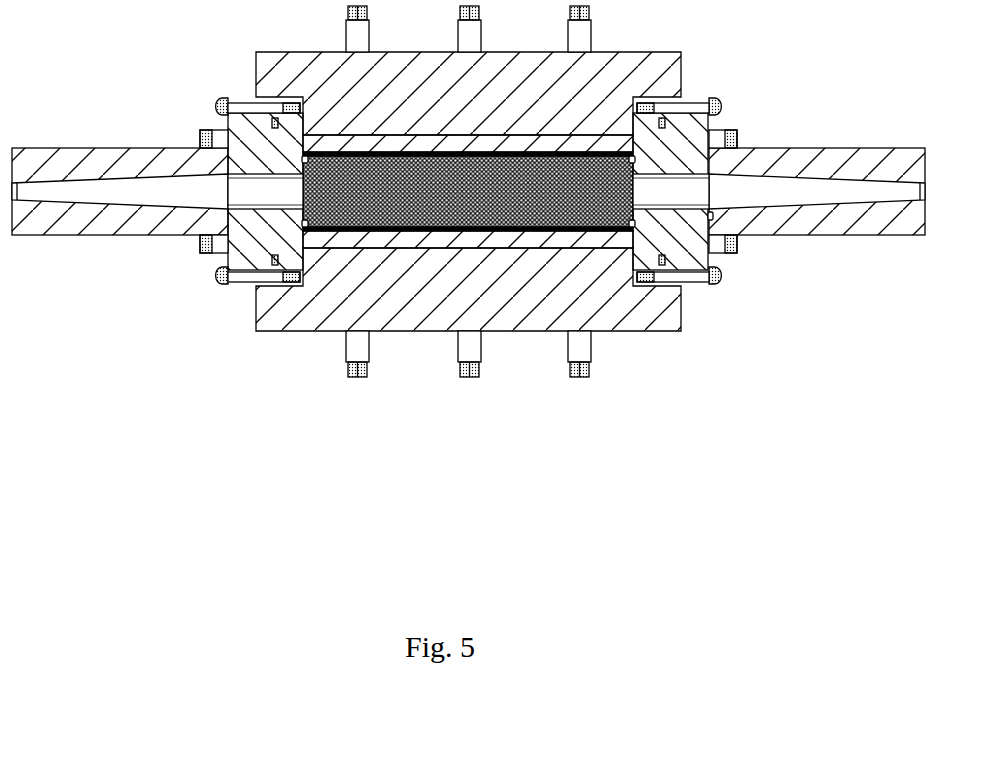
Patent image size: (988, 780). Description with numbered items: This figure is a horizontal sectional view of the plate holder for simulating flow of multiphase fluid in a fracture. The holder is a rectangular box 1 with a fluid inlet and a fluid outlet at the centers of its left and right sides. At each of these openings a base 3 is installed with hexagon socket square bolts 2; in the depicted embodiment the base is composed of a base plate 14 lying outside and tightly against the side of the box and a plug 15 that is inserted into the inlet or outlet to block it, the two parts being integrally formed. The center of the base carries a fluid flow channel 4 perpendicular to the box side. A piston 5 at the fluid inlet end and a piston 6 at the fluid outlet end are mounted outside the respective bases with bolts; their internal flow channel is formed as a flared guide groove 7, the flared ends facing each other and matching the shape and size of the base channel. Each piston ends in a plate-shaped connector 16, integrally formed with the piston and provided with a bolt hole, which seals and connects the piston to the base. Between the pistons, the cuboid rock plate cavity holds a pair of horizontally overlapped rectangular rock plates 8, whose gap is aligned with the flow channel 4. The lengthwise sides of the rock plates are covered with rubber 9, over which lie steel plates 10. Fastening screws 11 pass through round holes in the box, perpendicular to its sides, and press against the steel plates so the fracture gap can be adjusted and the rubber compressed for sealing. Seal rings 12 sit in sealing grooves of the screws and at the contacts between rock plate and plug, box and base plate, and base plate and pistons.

The rectangular box 1 is at (263, 58).
The hexagon socket square bolts 2 is at (217, 105).
The base 3 is at (240, 125).
The fluid flow channel 4 is at (205, 256).
The piston at the fluid inlet end 5 is at (63, 152).
The piston at the fluid outlet end 6 is at (819, 157).
The flared guide groove 7 is at (190, 193).
The rectangular rock plates 8 is at (424, 215).
The rubber 9 is at (409, 232).
The steel plate 10 is at (442, 248).
The fastening screws 11 is at (352, 378).
The seal rings 12 is at (712, 217).
The base plate 14 is at (692, 133).
The plug 15 is at (688, 105).
The plate-shaped connector 16 is at (712, 247).